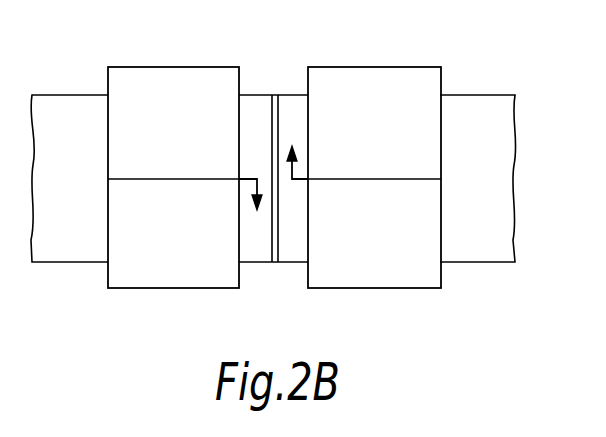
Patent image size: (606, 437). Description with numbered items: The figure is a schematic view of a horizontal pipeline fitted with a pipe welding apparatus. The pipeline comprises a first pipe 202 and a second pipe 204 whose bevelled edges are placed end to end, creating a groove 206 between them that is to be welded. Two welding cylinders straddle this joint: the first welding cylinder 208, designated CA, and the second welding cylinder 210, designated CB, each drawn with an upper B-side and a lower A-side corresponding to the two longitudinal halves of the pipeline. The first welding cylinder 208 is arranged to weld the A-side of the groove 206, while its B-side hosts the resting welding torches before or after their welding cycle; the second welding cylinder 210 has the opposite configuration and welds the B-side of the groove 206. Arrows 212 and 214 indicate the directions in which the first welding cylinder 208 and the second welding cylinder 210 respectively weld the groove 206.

The first pipe 202 is at (65, 112).
The second pipe 204 is at (480, 113).
The groove 206 is at (276, 96).
The first welding cylinder 208 is at (143, 78).
The second welding cylinder 210 is at (422, 85).
The arrow 212 is at (253, 190).
The arrow 214 is at (296, 168).